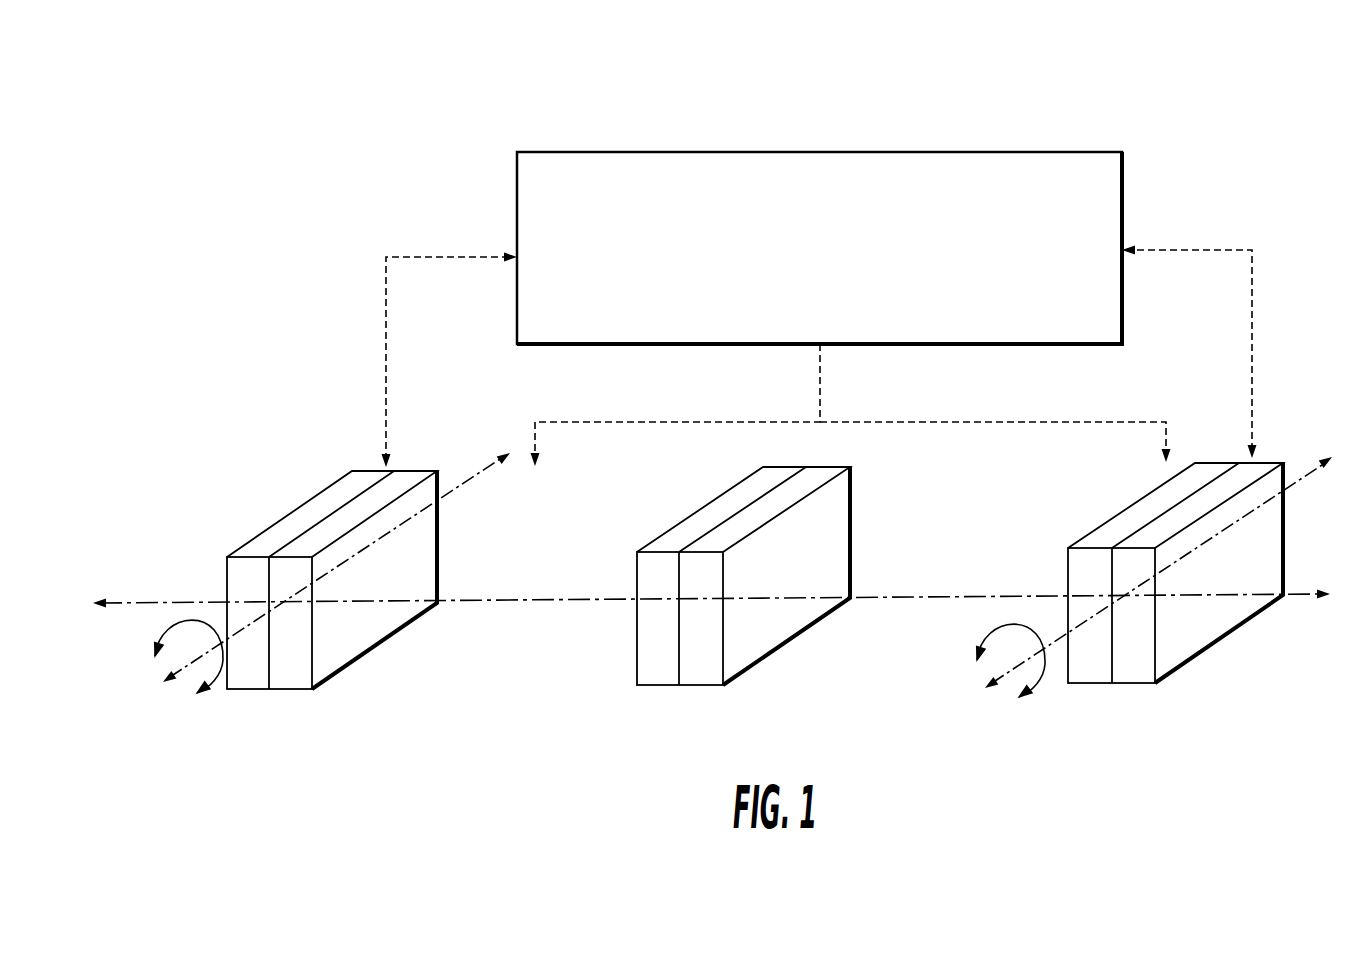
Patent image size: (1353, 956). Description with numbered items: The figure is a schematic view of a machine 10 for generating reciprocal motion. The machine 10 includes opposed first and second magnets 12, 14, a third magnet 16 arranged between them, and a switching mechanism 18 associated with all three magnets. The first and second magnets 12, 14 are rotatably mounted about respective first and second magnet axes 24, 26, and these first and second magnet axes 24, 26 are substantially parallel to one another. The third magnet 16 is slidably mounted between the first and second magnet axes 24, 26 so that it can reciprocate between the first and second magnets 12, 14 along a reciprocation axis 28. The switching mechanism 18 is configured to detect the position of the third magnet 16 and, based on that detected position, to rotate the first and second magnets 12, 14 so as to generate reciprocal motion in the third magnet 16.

The machine for generating reciprocal motion 10 is at (142, 243).
The first magnet 12 is at (340, 645).
The second magnet 14 is at (1207, 637).
The third magnet 16 is at (753, 640).
The switching mechanism 18 is at (1068, 162).
The first magnet axis 24 is at (190, 667).
The second magnet axis 26 is at (1057, 643).
The reciprocation axis 28 is at (538, 600).